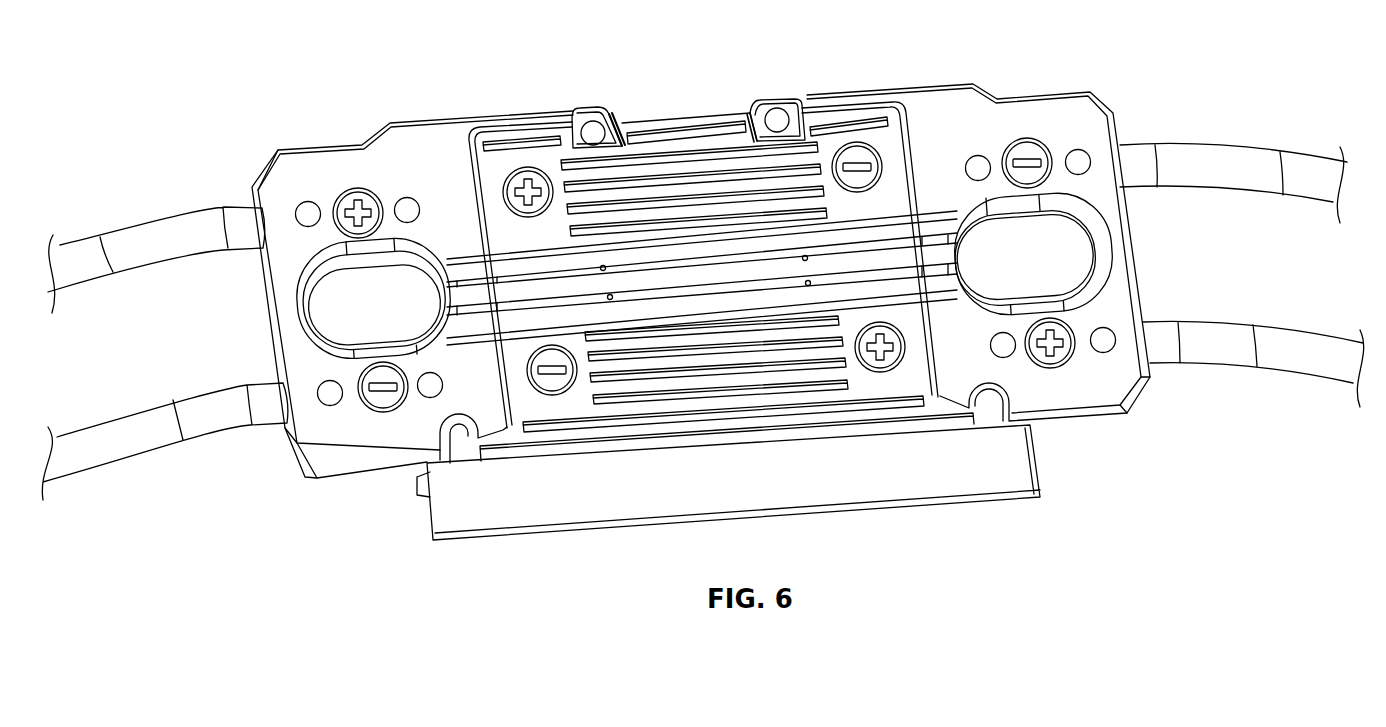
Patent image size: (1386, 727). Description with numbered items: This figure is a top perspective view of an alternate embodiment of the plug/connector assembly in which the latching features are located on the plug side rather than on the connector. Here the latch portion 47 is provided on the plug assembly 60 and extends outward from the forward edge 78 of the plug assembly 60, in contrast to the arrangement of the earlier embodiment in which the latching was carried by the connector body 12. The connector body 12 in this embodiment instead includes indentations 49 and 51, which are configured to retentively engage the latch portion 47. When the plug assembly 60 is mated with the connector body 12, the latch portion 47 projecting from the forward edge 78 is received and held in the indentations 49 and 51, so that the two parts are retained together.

The connector body 12 is at (686, 112).
The latch portion 47 is at (583, 121).
The indentation 49 is at (620, 135).
The indentation 51 is at (750, 117).
The plug assembly 60 is at (305, 160).
The forward edge 78 is at (463, 140).